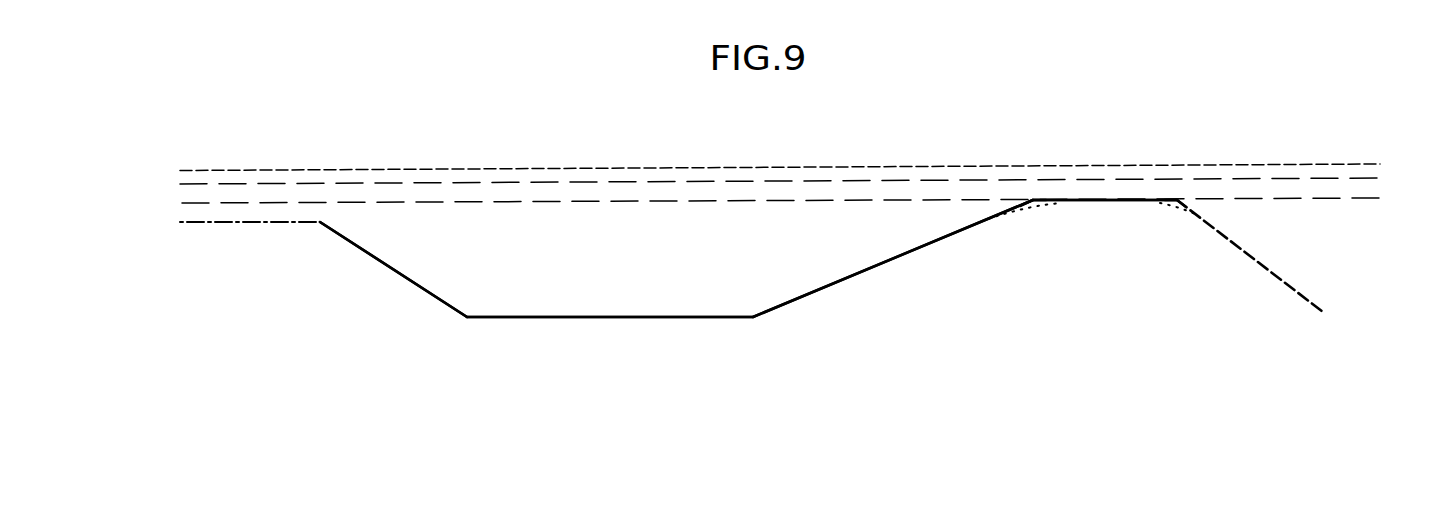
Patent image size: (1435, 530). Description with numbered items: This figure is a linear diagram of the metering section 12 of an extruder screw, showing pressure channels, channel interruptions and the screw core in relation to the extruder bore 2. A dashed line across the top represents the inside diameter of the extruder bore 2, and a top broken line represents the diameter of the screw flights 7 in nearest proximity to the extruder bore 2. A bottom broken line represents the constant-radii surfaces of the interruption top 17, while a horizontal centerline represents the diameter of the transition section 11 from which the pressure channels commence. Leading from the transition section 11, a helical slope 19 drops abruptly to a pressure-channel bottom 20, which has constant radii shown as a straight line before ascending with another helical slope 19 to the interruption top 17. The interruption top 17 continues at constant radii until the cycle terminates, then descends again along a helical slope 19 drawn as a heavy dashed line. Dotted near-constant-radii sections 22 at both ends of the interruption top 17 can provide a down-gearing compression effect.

The extruder bore 2 is at (257, 170).
The screw flights 7 is at (280, 184).
The transition section 11 is at (273, 221).
The metering section 12 is at (191, 137).
The interruption top 17 is at (357, 203).
The helical slope 19 is at (393, 263).
The pressure-channel bottom 20 is at (552, 317).
The near-constant-radii sections 22 is at (1040, 205).